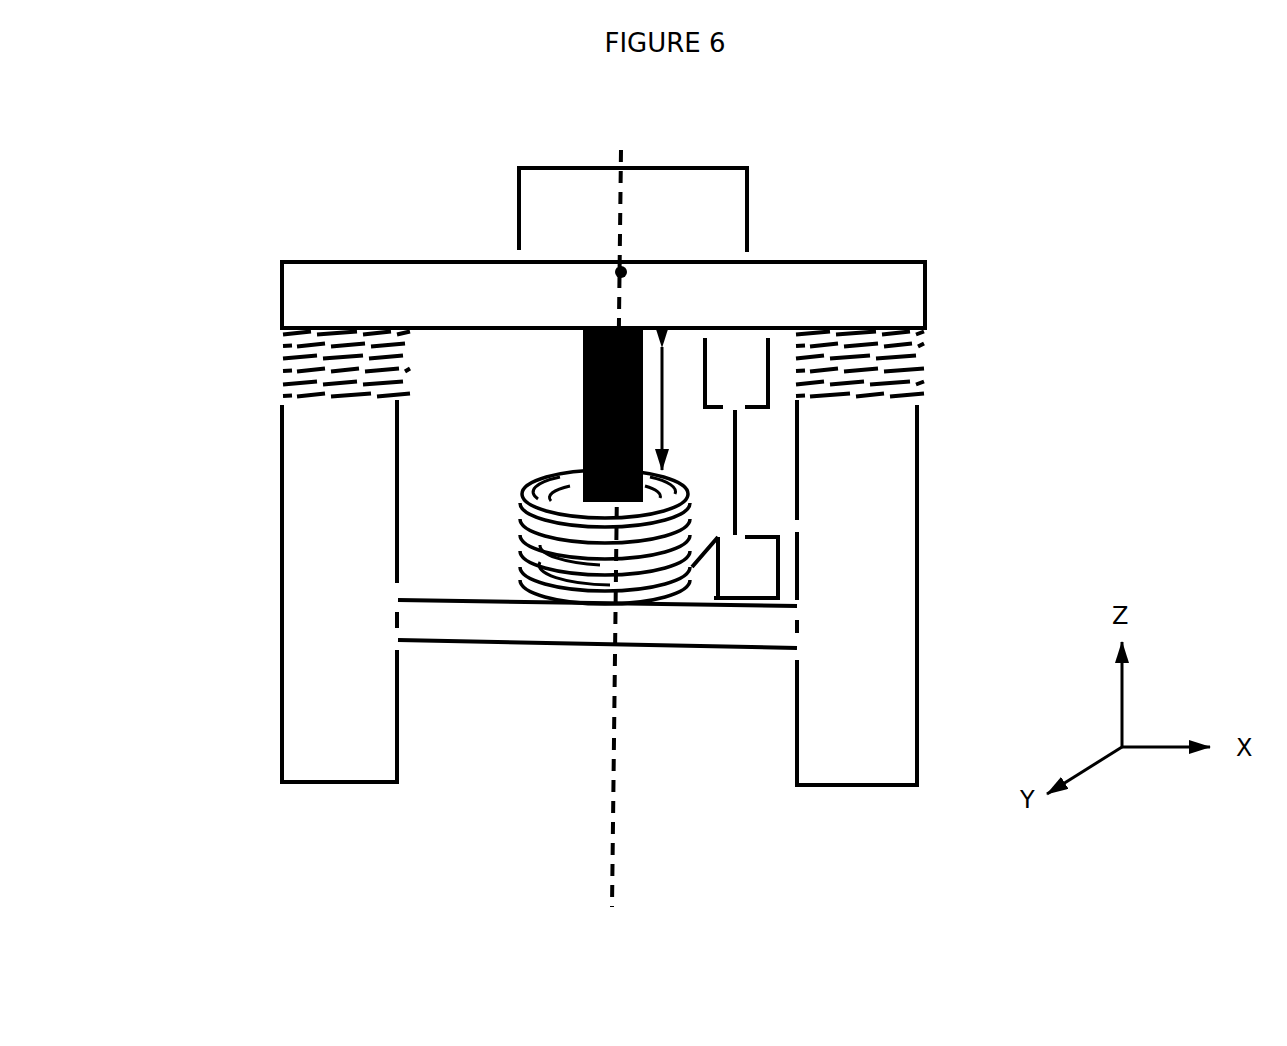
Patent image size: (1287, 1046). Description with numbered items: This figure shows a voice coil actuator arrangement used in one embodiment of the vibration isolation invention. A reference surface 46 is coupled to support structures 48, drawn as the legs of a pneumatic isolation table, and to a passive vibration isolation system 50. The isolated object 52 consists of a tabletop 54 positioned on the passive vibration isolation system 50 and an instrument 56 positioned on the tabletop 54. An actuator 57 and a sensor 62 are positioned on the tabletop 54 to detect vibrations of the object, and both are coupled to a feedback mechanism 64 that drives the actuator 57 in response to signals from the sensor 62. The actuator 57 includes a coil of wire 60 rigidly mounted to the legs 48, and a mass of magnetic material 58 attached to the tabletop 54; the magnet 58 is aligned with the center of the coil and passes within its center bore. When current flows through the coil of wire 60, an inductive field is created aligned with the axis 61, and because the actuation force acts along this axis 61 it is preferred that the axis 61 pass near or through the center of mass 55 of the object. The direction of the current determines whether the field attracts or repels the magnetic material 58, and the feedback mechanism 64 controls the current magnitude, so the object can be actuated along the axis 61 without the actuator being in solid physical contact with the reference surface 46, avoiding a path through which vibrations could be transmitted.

The reference surface 46 is at (772, 641).
The support structures 48 is at (300, 477).
The passive vibration isolation system 50 is at (298, 358).
The object 52 is at (942, 227).
The tabletop 54 is at (323, 307).
The center of mass 55 is at (638, 266).
The instrument 56 is at (572, 232).
The actuator 57 is at (470, 378).
The mass of magnetic material 58 is at (582, 385).
The coil of wire 60 is at (548, 516).
The axis 61 is at (622, 760).
The sensor 62 is at (750, 386).
The feedback mechanism 64 is at (772, 555).